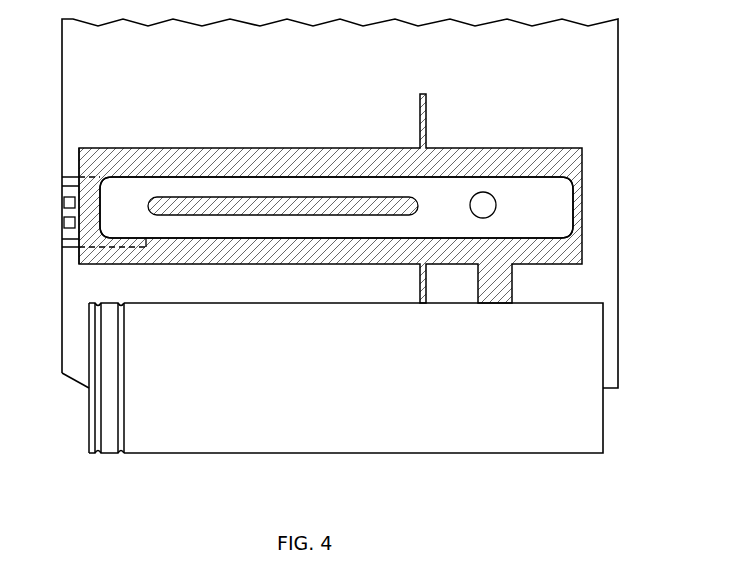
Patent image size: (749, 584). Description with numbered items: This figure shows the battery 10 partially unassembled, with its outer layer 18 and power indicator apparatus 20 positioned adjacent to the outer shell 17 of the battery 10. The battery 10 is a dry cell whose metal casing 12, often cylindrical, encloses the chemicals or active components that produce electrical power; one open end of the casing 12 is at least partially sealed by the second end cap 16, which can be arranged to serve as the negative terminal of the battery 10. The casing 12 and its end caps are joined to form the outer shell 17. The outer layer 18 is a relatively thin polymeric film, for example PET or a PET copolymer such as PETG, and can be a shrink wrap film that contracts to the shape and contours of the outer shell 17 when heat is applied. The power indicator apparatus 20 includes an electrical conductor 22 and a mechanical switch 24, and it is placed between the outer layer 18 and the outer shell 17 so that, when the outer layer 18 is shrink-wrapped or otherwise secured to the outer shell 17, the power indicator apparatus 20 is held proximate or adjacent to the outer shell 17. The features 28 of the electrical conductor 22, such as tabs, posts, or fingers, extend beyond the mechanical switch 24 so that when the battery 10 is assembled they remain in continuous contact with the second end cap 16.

The battery 10 is at (362, 276).
The casing 12 is at (357, 437).
The second end cap 16 is at (89, 414).
The outer shell 17 is at (318, 418).
The outer layer 18 is at (70, 113).
The power indicator apparatus 20 is at (296, 182).
The electrical conductor 22 is at (157, 178).
The mechanical switch 24 is at (299, 160).
The features 28 is at (63, 213).